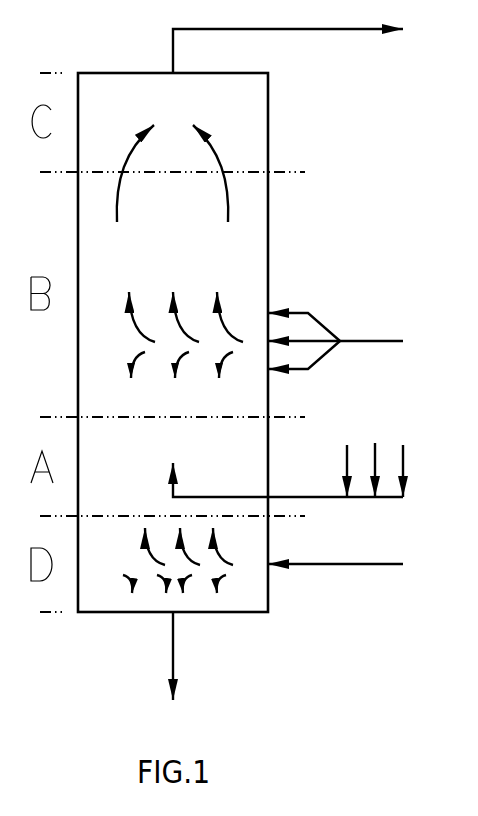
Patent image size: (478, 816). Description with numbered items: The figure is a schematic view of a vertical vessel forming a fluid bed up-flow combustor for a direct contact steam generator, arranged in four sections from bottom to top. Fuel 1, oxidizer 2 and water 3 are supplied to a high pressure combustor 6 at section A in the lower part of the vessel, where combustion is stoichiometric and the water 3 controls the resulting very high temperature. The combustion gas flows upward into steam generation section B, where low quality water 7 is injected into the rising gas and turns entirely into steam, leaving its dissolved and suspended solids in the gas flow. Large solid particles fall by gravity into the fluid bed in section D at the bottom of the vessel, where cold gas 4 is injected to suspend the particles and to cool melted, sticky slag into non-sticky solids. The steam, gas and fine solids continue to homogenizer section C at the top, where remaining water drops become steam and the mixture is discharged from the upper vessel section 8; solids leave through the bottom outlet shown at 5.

The fuel 1 is at (403, 452).
The oxidizer 2 is at (375, 452).
The water 3 is at (347, 452).
The cold gas 4 is at (358, 564).
The bottom outlet 5 is at (173, 645).
The high pressure combustor 6 is at (173, 493).
The low quality water 7 is at (362, 341).
The upper vessel section discharge 8 is at (360, 29).